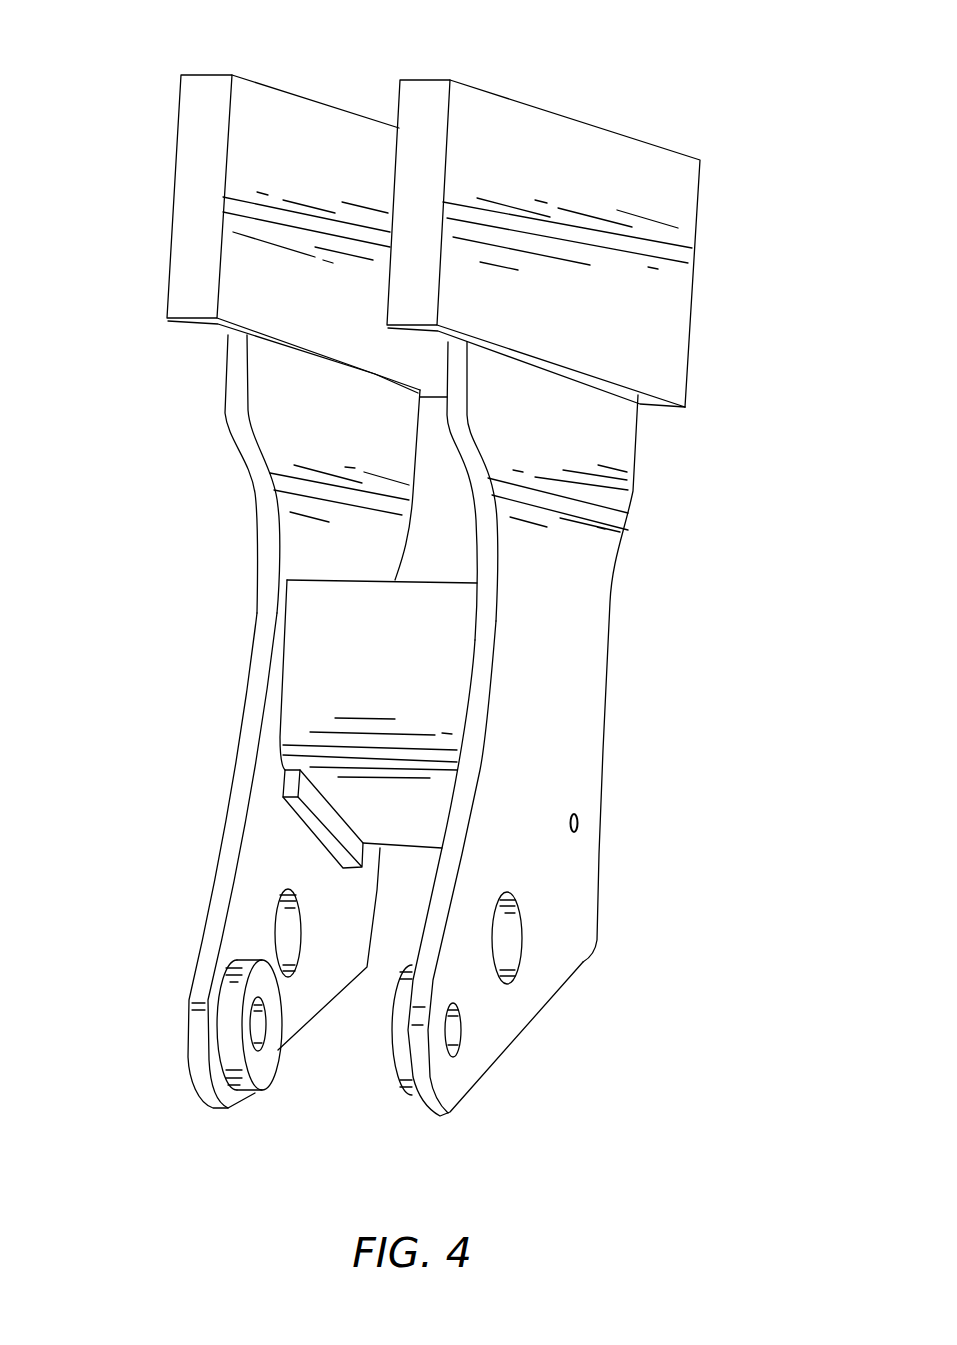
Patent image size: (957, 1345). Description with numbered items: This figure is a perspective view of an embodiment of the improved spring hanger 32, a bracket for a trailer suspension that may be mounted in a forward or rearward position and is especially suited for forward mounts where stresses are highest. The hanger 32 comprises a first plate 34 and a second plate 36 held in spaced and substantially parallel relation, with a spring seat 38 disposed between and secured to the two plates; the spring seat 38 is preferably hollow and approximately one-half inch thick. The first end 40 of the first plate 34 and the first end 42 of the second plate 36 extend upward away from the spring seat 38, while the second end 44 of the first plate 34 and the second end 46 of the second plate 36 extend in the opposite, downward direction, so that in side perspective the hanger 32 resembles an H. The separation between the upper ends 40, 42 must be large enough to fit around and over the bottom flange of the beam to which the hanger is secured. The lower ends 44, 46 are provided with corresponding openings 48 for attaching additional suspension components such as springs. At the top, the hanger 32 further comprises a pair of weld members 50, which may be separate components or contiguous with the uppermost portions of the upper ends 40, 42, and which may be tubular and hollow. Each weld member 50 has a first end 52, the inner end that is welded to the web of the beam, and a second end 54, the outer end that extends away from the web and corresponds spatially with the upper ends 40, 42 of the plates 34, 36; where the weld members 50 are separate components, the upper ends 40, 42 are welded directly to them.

The spring hanger 32 is at (693, 828).
The first plate 34 is at (265, 538).
The second plate 36 is at (568, 684).
The spring seat 38 is at (318, 653).
The first end of first plate 40 is at (235, 383).
The first end of second plate 42 is at (607, 428).
The second end of first plate 44 is at (210, 1100).
The second end of second plate 46 is at (428, 1107).
The openings 48 is at (290, 940).
The weld members 50 is at (192, 203).
The first end of weld member 52 is at (277, 122).
The second end of weld member 54 is at (177, 125).